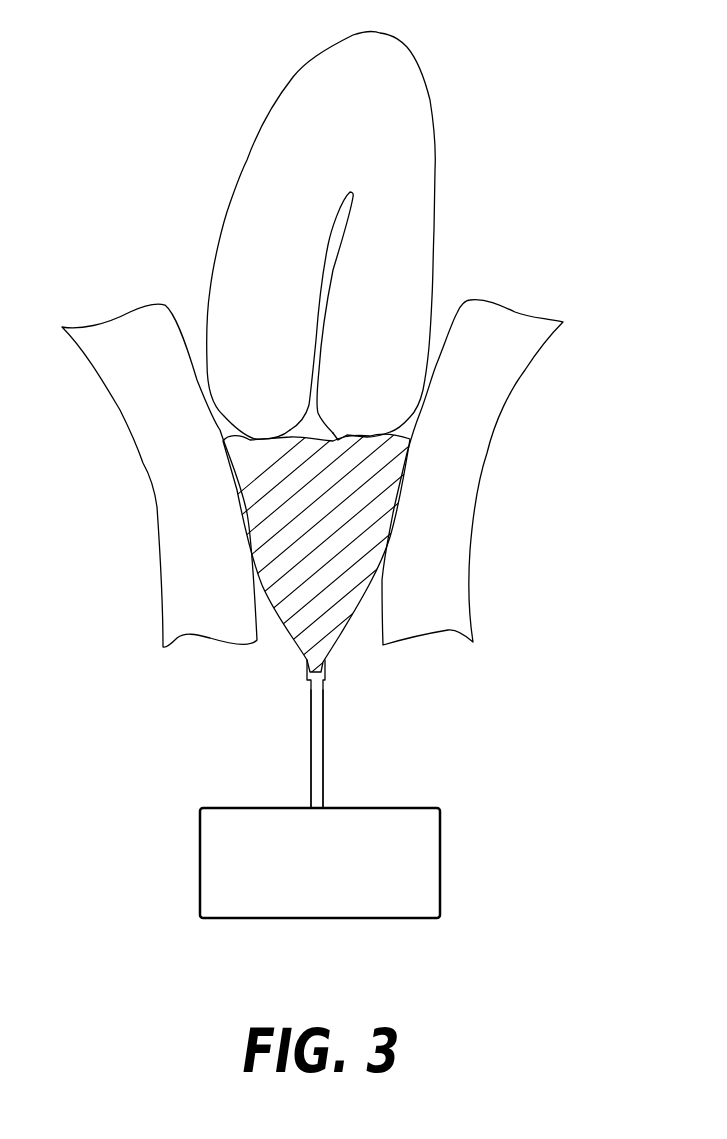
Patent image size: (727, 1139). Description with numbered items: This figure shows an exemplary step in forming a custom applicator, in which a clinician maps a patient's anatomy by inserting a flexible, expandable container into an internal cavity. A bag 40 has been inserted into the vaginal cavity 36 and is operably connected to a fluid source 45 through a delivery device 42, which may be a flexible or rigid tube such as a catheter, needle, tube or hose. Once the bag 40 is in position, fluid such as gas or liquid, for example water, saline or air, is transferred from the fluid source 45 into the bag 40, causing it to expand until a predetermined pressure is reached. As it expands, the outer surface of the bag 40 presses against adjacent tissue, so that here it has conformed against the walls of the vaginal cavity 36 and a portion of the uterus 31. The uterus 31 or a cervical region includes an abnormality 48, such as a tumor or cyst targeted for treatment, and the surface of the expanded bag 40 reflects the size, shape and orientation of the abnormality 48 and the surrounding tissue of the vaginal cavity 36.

The uterus 31 is at (247, 282).
The vaginal cavity 36 is at (365, 638).
The abnormality 48 is at (247, 483).
The bag 40 is at (293, 640).
The delivery device 42 is at (323, 752).
The fluid source 45 is at (200, 838).